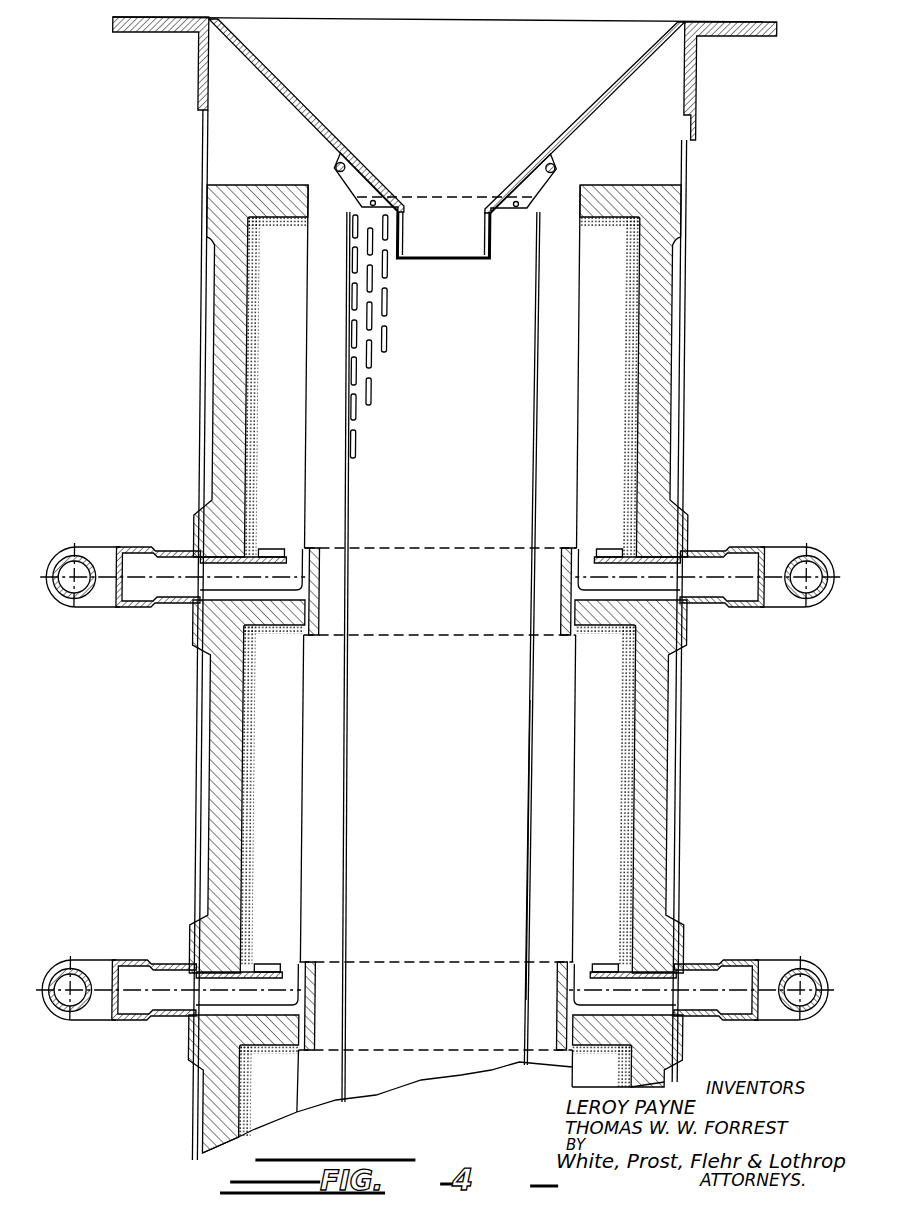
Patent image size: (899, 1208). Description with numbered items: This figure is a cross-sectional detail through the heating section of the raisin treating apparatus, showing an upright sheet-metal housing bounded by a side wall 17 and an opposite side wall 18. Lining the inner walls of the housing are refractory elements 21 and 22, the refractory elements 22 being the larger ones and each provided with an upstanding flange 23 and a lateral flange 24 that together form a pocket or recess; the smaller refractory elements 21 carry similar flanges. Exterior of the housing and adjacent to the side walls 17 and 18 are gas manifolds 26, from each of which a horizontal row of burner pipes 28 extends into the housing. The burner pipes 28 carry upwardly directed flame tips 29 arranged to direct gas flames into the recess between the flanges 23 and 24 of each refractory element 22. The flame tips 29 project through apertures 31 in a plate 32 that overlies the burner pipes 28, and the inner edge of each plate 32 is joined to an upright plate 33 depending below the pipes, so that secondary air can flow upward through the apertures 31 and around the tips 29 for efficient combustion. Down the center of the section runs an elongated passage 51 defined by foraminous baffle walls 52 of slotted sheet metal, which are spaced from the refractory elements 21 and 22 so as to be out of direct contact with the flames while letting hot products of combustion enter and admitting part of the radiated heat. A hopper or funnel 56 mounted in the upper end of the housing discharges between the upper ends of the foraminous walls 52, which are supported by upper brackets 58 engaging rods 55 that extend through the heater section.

The side wall 17 is at (202, 387).
The opposite side wall 18 is at (686, 414).
The refractory element 21 is at (338, 214).
The refractory element 22 is at (240, 350).
The upstanding flange 23 is at (306, 430).
The lateral flange 24 is at (290, 214).
The gas manifold 26 is at (100, 553).
The burner pipe 28 is at (282, 583).
The flame tip 29 is at (306, 554).
The aperture 31 is at (253, 556).
The plate 32 is at (289, 549).
The upright plate 33 is at (322, 598).
The passage 51 is at (516, 822).
The foraminous side baffle wall 52 is at (351, 494).
The rod 55 is at (335, 166).
The hopper 56 is at (286, 78).
The upper bracket 58 is at (365, 183).